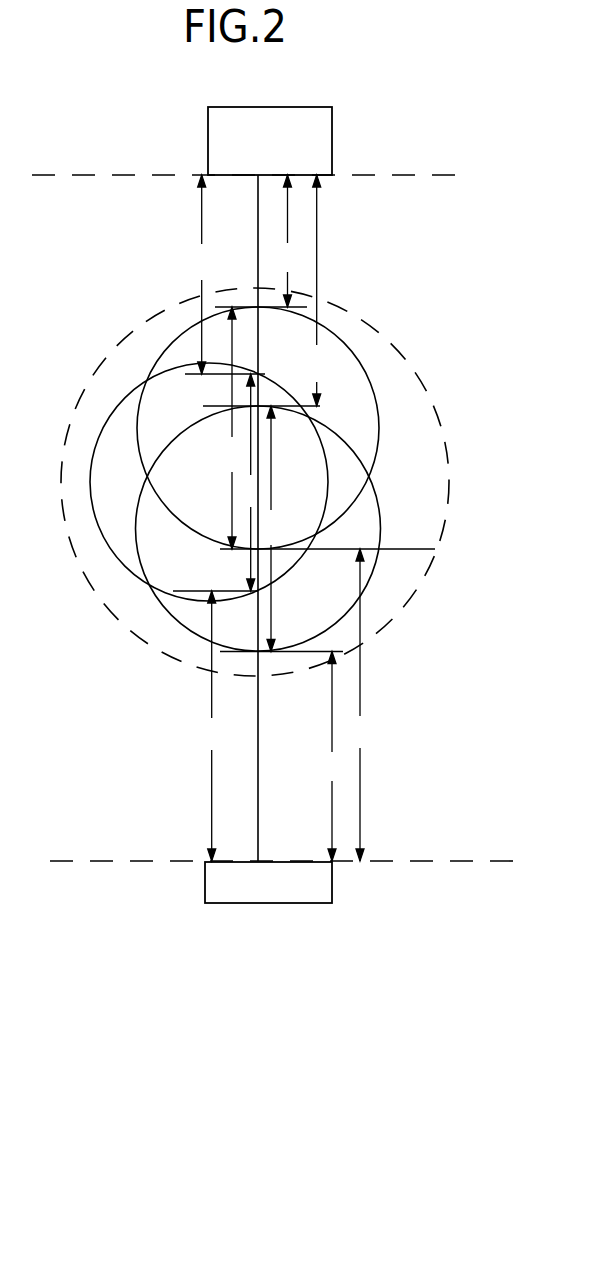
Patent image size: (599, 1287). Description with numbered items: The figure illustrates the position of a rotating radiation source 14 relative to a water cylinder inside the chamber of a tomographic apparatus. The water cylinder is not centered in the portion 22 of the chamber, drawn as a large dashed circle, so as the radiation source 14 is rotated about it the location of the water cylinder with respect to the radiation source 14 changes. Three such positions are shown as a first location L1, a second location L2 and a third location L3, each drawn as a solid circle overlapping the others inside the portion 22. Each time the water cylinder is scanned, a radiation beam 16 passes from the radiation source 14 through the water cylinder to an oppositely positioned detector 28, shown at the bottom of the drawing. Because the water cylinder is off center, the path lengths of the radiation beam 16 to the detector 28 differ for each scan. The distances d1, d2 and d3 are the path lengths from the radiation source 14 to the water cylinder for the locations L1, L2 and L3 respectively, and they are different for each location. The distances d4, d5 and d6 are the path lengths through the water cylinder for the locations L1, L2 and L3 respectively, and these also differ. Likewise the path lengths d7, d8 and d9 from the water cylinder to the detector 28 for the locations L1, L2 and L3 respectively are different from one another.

The radiation source 14 is at (333, 156).
The radiation beam 16 is at (260, 793).
The portion of chamber 22 is at (398, 610).
The detector 28 is at (332, 884).
The first location L1 is at (376, 432).
The second location L2 is at (88, 490).
The third location L3 is at (372, 560).
The distance d1 is at (292, 241).
The distance d2 is at (204, 274).
The distance d3 is at (318, 290).
The path length through water cylinder d4 is at (234, 428).
The path length through water cylinder d5 is at (254, 482).
The path length through water cylinder d6 is at (270, 529).
The path length from water cylinder to detector d7 is at (364, 705).
The path length from water cylinder to detector d8 is at (214, 726).
The path length from water cylinder to detector d9 is at (334, 757).